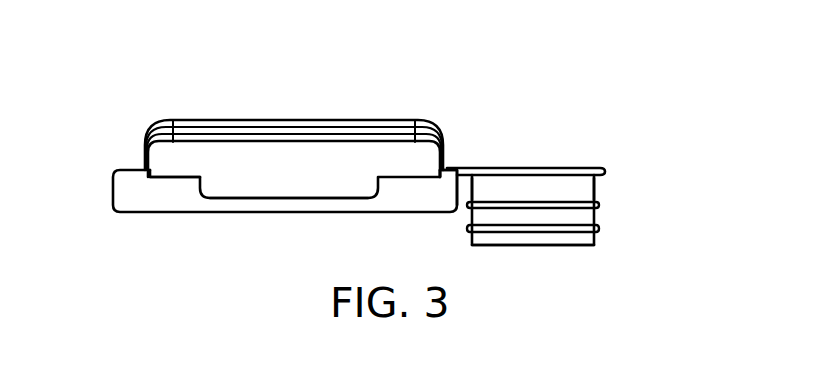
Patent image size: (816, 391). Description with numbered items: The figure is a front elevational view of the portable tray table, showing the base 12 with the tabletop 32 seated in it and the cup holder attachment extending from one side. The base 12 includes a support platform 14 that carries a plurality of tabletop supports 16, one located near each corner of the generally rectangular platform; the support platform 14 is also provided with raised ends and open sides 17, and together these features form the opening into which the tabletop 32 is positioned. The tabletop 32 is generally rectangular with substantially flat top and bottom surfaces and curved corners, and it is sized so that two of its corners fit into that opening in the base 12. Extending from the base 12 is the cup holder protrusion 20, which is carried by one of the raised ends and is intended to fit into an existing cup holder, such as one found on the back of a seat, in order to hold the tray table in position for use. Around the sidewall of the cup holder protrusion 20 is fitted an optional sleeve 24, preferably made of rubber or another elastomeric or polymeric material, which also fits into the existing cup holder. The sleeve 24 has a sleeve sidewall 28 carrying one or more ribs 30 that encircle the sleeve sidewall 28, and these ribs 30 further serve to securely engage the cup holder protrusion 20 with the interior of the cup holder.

The base 12 is at (237, 213).
The support platform 14 is at (432, 193).
The tabletop support 16 is at (168, 177).
The open sides 17 is at (325, 198).
The cup holder protrusion 20 is at (537, 245).
The sleeve 24 is at (585, 245).
The sleeve sidewall 28 is at (580, 192).
The ribs 30 is at (593, 228).
The tabletop 32 is at (143, 137).